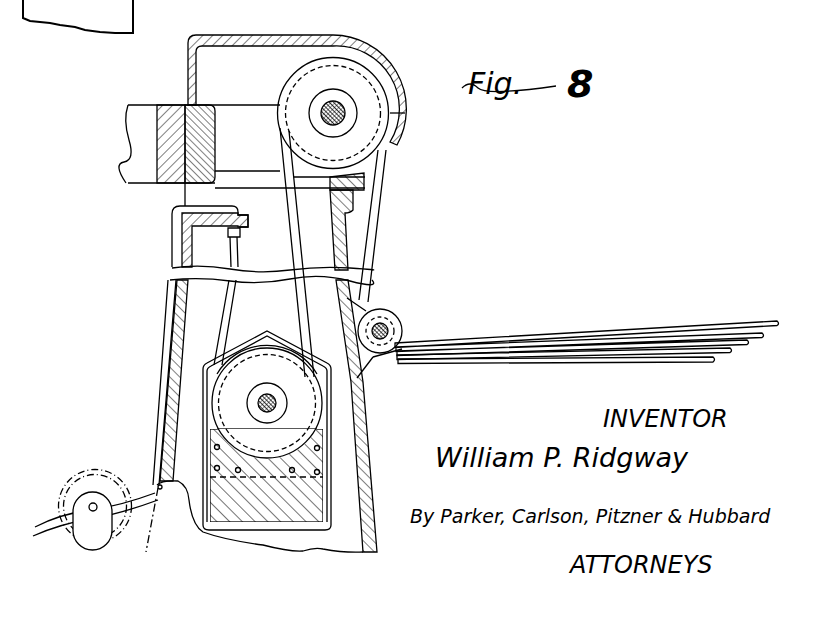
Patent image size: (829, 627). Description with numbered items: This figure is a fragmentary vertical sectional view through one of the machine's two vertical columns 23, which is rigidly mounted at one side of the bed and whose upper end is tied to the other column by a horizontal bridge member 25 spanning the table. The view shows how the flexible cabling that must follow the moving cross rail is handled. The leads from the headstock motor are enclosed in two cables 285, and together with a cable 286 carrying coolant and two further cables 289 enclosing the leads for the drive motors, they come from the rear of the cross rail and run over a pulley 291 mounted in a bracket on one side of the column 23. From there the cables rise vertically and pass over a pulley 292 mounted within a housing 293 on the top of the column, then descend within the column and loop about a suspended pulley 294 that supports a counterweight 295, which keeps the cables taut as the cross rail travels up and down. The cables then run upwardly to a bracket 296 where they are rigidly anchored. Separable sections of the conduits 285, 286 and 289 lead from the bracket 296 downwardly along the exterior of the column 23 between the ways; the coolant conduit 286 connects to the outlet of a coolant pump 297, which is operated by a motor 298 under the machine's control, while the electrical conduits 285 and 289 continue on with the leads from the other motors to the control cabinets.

The vertical column 23 is at (370, 408).
The horizontal bridge member 25 is at (140, 184).
The cables 285 is at (629, 348).
The cable 286 is at (556, 364).
The cables 289 is at (700, 334).
The pulley 291 is at (392, 311).
The pulley 292 is at (366, 84).
The housing 293 is at (312, 36).
The suspended pulley 294 is at (270, 347).
The counterweight 295 is at (306, 517).
The bracket 296 is at (246, 229).
The coolant pump 297 is at (63, 505).
The motor 298 is at (67, 491).